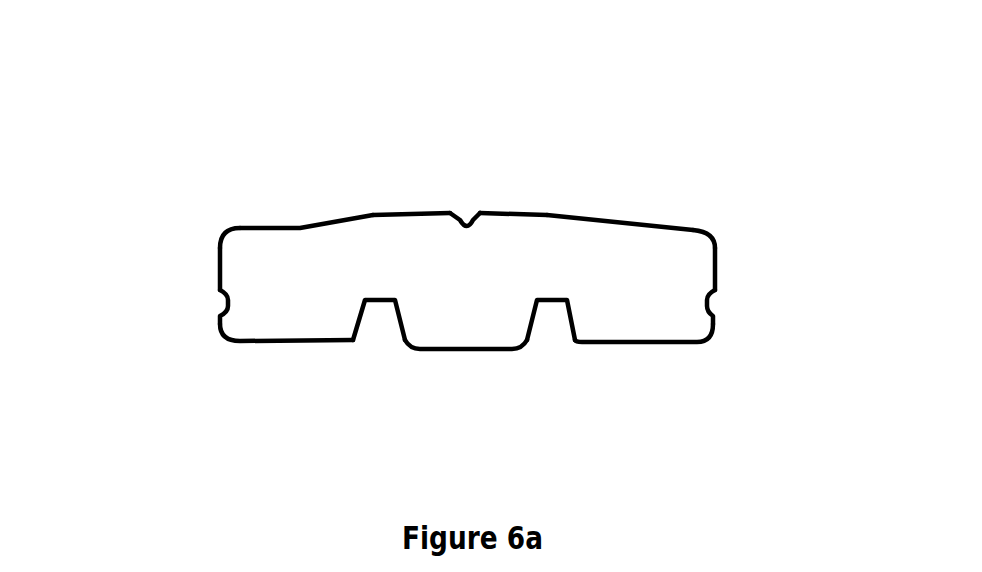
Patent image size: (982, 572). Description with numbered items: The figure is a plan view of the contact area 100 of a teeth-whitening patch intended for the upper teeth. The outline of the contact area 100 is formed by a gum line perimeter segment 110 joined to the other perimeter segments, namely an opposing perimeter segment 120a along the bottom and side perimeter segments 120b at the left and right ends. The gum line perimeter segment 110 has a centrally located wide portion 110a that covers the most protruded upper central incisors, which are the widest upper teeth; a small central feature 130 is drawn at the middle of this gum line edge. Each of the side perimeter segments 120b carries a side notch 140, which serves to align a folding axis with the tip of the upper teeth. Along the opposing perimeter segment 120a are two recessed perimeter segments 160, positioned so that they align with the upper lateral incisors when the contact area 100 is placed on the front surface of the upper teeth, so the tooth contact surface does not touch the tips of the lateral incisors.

The contact area 100 is at (215, 157).
The gum line perimeter segment 110 is at (258, 222).
The wide portion 110a is at (420, 212).
The opposing perimeter segment 120a is at (310, 343).
The side perimeter segments 120b is at (217, 267).
The central notch 130 is at (475, 223).
The side notches 140 is at (220, 300).
The recessed perimeter segments 160 is at (380, 300).